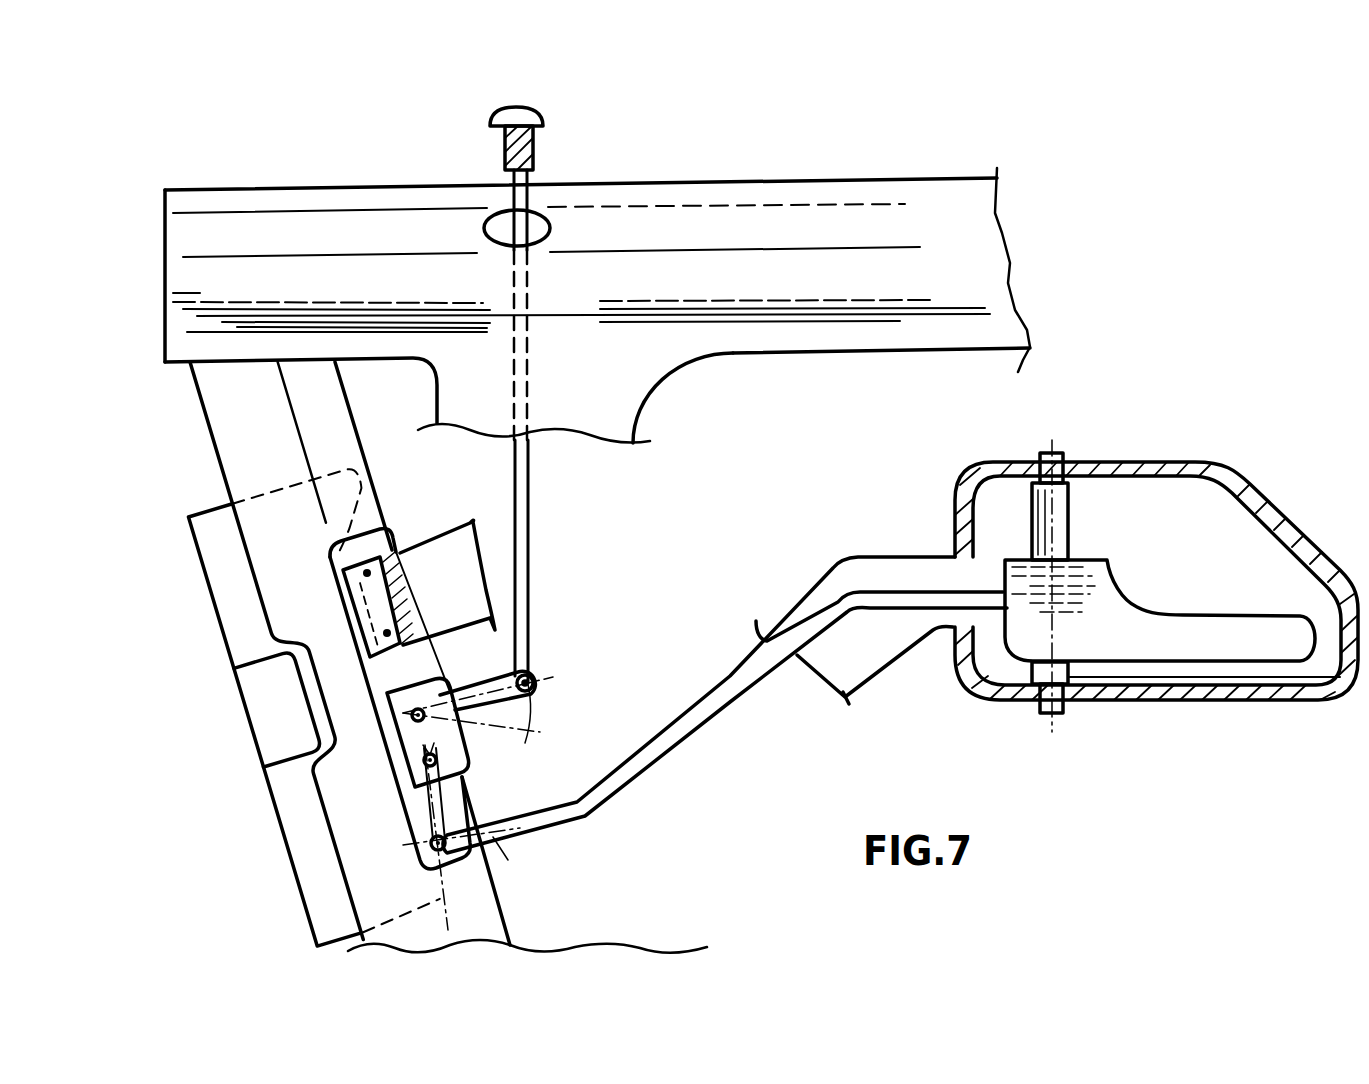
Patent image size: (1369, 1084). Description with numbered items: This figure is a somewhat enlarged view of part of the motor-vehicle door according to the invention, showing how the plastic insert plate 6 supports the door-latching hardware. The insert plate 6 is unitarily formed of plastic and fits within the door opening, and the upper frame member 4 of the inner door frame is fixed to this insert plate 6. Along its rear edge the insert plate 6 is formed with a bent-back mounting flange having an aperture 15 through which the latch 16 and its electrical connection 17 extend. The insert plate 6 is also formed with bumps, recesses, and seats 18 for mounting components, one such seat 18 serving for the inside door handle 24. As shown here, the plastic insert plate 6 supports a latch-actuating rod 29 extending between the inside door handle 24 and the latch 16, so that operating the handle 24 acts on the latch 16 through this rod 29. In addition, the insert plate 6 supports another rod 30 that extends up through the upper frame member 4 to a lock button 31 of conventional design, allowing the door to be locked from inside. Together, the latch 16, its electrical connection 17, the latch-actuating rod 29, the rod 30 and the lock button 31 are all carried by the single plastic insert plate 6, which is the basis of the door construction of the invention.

The upper frame member 4 is at (922, 258).
The insert plate 6 is at (210, 440).
The aperture 15 is at (390, 768).
The latch 16 is at (227, 610).
The electrical connection 17 is at (392, 568).
The seat 18 is at (1253, 489).
The inside door handle 24 is at (1207, 648).
The latch-actuating rod 29 is at (527, 862).
The rod 30 is at (532, 588).
The lock button 31 is at (530, 141).